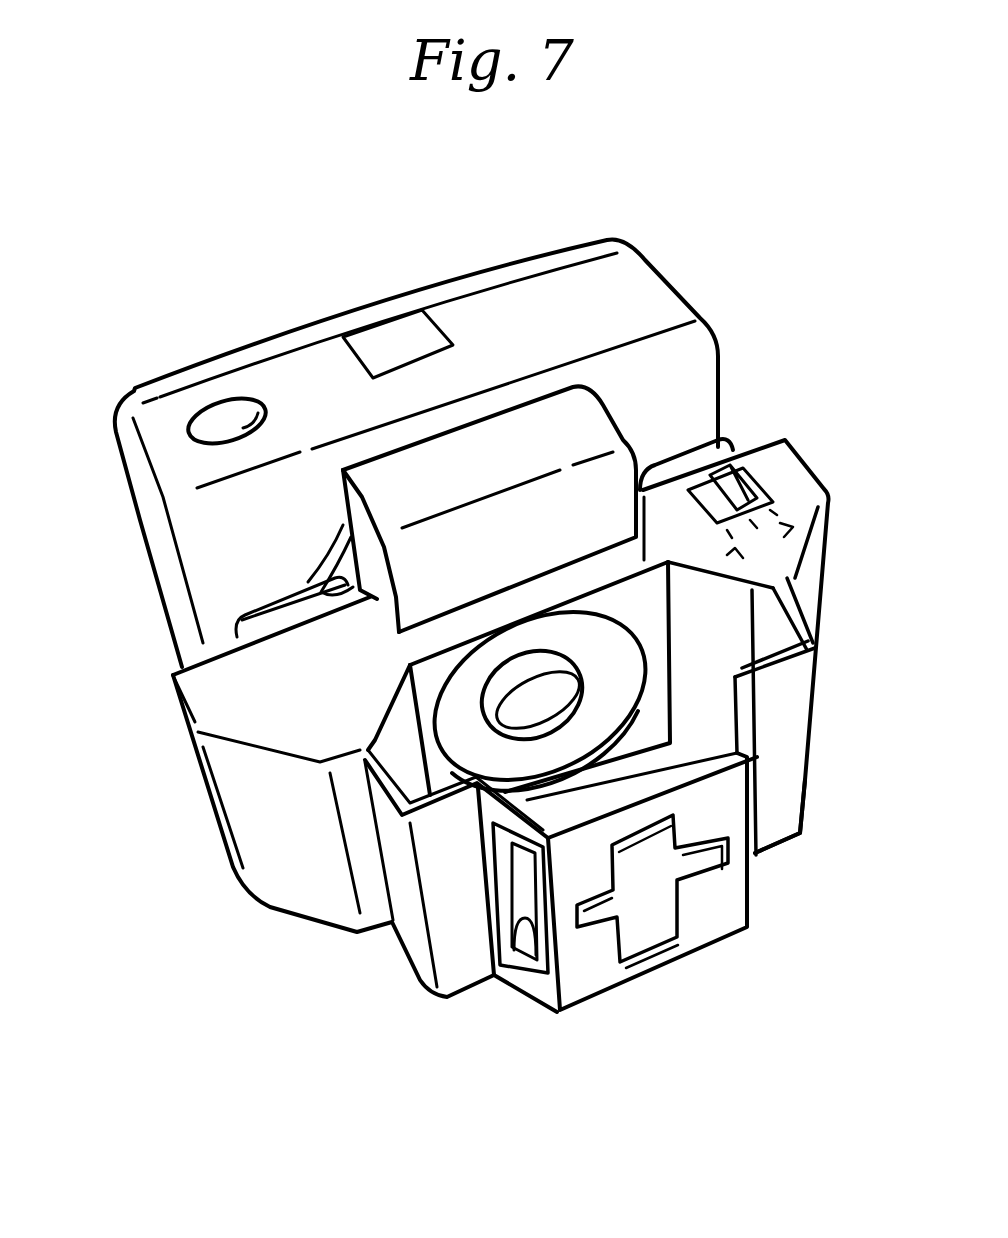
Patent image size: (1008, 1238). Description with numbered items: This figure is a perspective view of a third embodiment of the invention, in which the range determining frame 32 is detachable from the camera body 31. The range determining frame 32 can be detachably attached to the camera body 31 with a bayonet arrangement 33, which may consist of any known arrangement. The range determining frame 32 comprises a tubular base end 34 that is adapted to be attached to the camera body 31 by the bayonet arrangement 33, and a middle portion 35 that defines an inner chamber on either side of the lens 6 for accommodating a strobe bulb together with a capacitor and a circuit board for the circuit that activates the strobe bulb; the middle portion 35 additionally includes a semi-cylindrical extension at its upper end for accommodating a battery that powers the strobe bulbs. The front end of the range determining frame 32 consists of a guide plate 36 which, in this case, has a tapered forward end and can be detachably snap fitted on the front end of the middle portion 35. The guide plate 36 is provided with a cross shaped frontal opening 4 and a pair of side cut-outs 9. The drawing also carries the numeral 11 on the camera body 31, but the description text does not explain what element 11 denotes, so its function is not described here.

The camera body 31 is at (680, 272).
The range determining frame 32 is at (822, 447).
The oval opening 11 is at (217, 420).
The bayonet arrangement 33 is at (343, 523).
The tubular base end 34 is at (327, 583).
The middle portion 35 is at (828, 568).
The guide plate 36 is at (773, 832).
The lens 6 is at (530, 690).
The side cut-outs 9 is at (533, 945).
The cross shaped frontal opening 4 is at (622, 928).